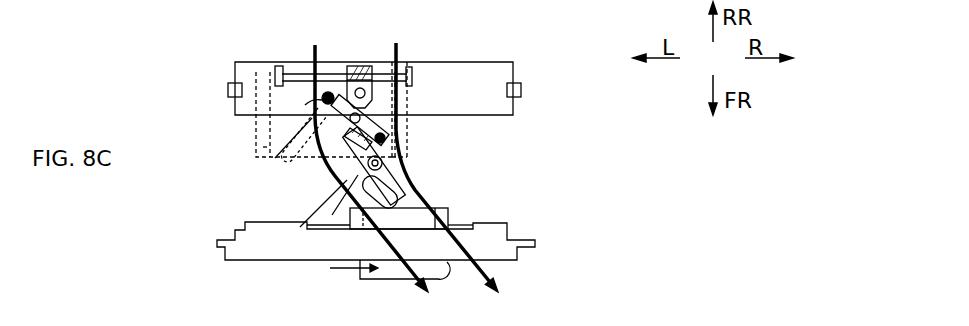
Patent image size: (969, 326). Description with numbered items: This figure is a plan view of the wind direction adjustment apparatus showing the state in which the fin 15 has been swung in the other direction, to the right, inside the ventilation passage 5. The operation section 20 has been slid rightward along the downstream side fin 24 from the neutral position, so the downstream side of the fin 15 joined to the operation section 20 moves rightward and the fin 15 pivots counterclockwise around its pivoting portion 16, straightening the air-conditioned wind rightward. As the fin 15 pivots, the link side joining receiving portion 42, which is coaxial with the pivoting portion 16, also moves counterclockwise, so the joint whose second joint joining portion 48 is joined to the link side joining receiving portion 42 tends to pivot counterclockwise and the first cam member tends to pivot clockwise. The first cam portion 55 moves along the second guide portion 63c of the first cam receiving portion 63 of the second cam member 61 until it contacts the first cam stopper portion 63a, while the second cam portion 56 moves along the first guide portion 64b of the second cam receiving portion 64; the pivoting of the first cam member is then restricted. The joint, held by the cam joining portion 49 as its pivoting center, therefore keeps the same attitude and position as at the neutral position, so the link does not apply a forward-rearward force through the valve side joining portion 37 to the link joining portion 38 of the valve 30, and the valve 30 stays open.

The ventilation passage 5 is at (510, 132).
The fin 15 is at (398, 193).
The pivoting portion 16 is at (400, 165).
The operation section 20 is at (400, 279).
The downstream side fin 24 is at (506, 255).
The valve 30 is at (236, 70).
The valve side joining portion 37 is at (362, 66).
The link joining portion 38 is at (296, 70).
The link side joining receiving portion 42 is at (333, 195).
The second joint joining portion 48 is at (350, 203).
The cam joining portion 49 is at (347, 150).
The first cam portion 55 is at (312, 112).
The second cam portion 56 is at (383, 160).
The second cam member 61 is at (262, 129).
The first cam receiving portion 63 is at (285, 148).
The first cam stopper portion 63a is at (329, 93).
The second guide portion 63c is at (283, 160).
The second cam receiving portion 64 is at (402, 106).
The first guide portion 64b is at (386, 137).